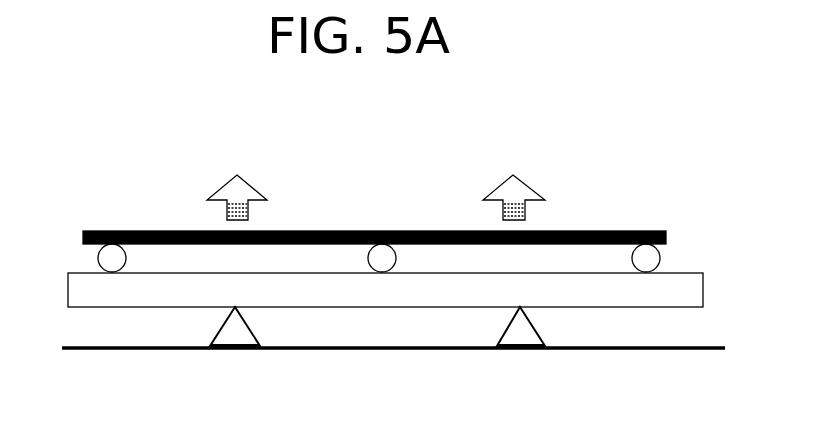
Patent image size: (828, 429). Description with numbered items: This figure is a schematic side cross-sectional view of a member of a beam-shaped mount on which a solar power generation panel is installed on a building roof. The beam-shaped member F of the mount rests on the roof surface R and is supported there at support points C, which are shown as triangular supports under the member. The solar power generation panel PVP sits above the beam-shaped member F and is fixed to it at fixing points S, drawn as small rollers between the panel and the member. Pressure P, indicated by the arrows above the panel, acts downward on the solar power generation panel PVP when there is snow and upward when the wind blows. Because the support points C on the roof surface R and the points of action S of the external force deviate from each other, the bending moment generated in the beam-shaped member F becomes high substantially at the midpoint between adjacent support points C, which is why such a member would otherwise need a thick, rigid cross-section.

The solar power generation panel PVP is at (148, 230).
The fixing points S is at (95, 262).
The beam-shaped member F is at (68, 297).
The pressure P is at (227, 188).
The roof surface R is at (150, 350).
The support points C is at (227, 352).